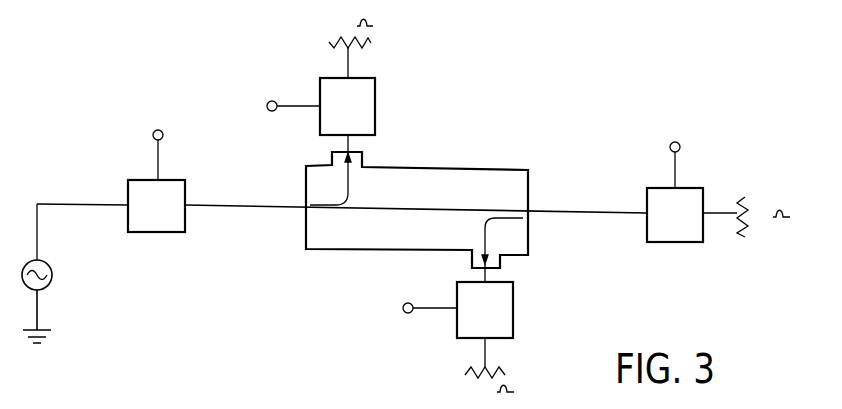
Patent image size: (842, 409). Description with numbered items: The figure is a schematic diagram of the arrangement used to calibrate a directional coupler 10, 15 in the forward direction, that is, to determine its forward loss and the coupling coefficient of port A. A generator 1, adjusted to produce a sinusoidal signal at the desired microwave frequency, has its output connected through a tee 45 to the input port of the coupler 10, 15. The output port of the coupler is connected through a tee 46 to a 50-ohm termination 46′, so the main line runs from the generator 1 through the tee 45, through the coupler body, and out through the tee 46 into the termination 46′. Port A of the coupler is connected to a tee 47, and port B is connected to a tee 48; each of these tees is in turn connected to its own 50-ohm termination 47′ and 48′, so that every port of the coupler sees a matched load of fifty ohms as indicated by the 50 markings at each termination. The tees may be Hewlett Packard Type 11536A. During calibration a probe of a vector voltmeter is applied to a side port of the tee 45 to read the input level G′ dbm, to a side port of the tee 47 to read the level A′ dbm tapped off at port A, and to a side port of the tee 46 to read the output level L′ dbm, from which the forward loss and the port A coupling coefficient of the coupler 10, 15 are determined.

The generator 1 is at (36, 287).
The directional coupler 10 is at (417, 207).
The directional coupler 15 is at (450, 170).
The tee 45 is at (163, 233).
The tee 46 is at (657, 227).
The 50-ohm termination 46′ is at (747, 200).
The tee 47 is at (368, 113).
The 50-ohm termination 47′ is at (331, 44).
The tee 48 is at (508, 330).
The 50-ohm termination 48′ is at (480, 367).
The 50-ohm termination 50 is at (564, 209).